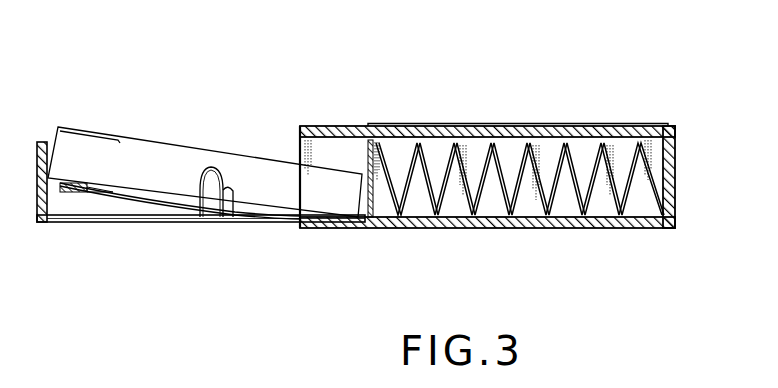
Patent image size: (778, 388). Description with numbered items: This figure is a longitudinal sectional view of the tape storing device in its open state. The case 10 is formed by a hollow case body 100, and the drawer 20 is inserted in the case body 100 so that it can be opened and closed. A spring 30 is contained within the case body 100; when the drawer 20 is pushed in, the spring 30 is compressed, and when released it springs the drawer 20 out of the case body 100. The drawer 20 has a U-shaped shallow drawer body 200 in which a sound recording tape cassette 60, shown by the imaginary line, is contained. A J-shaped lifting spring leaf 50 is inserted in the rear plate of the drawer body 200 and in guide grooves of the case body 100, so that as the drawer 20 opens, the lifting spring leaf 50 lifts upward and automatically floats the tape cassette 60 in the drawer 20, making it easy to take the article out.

The case 10 is at (494, 118).
The drawer 20 is at (43, 138).
The spring 30 is at (572, 146).
The lifting spring leaf 50 is at (105, 214).
The sound recording tape cassette 60 is at (189, 142).
The case body 100 is at (432, 126).
The drawer body 200 is at (173, 227).